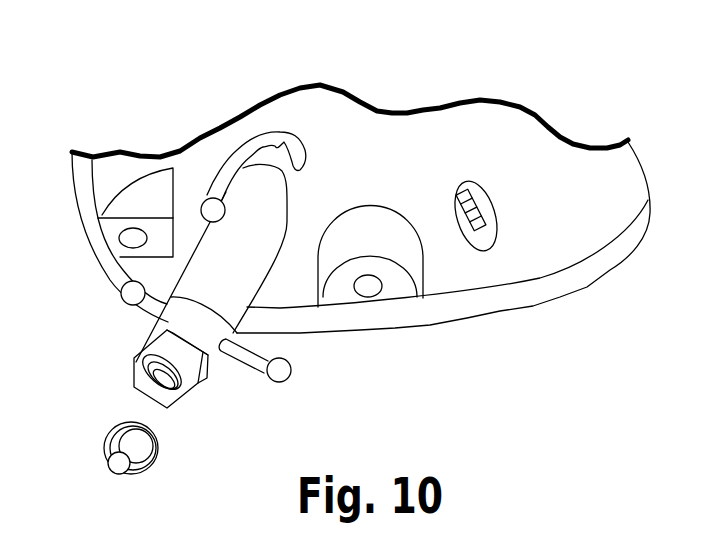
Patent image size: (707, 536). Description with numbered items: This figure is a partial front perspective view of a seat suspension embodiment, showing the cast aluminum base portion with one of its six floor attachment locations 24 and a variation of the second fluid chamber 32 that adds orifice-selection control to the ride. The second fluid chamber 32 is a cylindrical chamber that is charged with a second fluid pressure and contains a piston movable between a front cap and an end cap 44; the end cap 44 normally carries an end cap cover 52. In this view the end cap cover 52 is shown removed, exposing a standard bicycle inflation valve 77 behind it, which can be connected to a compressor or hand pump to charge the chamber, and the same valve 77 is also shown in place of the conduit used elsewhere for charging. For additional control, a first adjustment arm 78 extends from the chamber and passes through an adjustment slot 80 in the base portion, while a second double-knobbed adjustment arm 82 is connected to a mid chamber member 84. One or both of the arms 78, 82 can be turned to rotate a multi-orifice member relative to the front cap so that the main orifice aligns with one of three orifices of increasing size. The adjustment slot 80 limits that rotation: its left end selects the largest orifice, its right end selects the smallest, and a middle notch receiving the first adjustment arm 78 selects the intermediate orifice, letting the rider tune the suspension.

The floor attachment location 24 is at (395, 290).
The second fluid chamber 32 is at (246, 376).
The end cap 44 is at (143, 352).
The end cap cover 52 is at (105, 463).
The bicycle inflation valve 77 is at (480, 210).
The first adjustment arm 78 is at (228, 176).
The adjustment slot 80 is at (301, 139).
The second double-knobbed adjustment arm 82 is at (291, 364).
The mid chamber member 84 is at (218, 356).